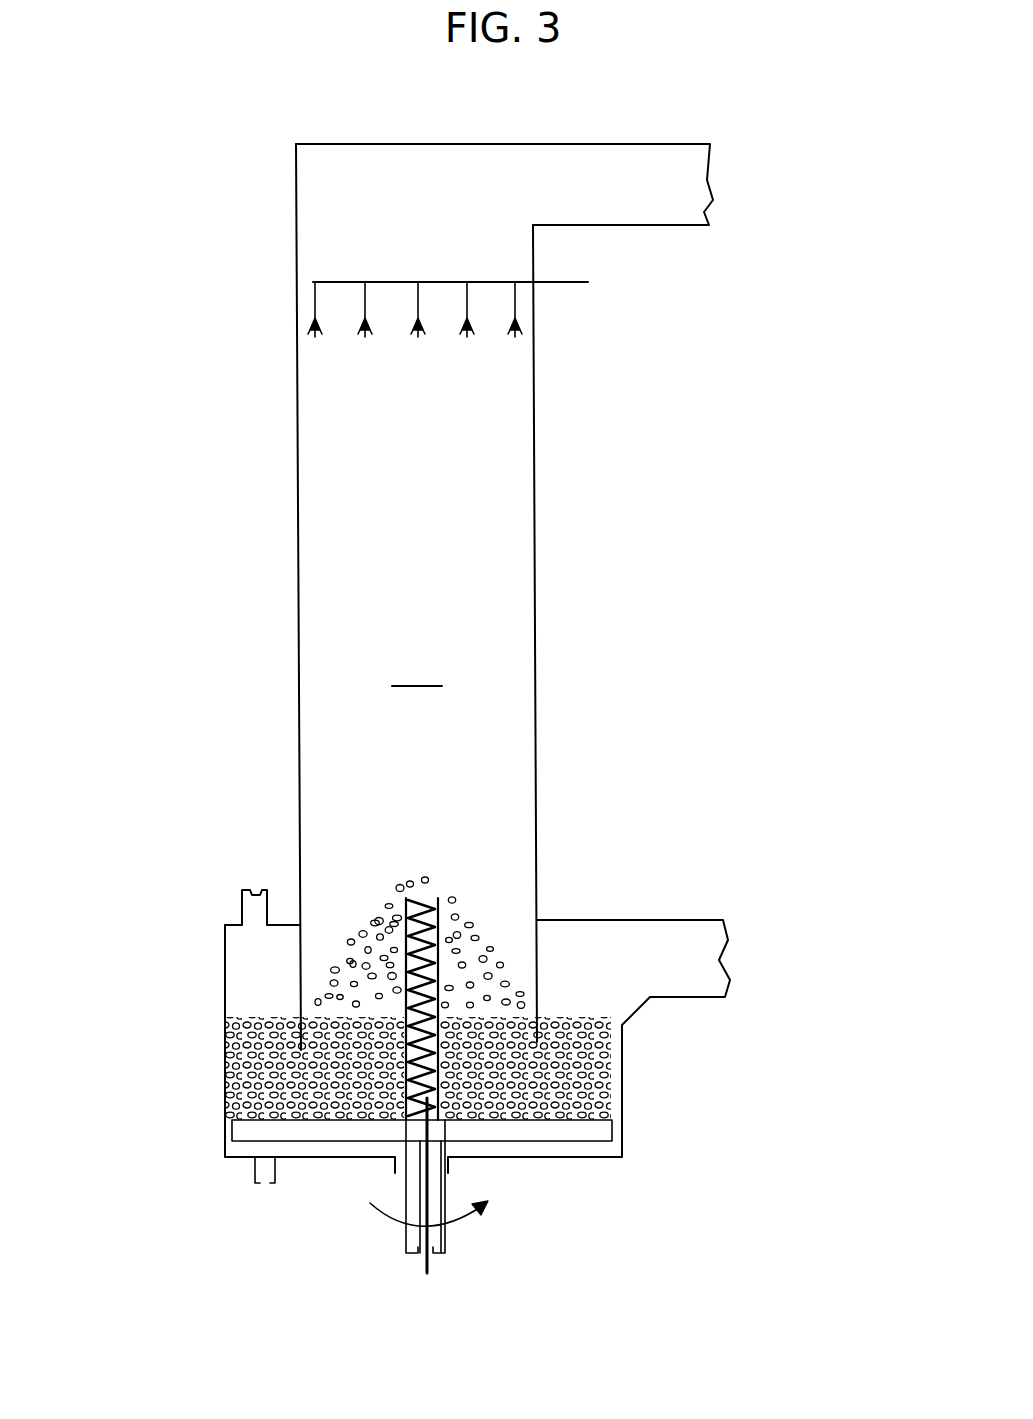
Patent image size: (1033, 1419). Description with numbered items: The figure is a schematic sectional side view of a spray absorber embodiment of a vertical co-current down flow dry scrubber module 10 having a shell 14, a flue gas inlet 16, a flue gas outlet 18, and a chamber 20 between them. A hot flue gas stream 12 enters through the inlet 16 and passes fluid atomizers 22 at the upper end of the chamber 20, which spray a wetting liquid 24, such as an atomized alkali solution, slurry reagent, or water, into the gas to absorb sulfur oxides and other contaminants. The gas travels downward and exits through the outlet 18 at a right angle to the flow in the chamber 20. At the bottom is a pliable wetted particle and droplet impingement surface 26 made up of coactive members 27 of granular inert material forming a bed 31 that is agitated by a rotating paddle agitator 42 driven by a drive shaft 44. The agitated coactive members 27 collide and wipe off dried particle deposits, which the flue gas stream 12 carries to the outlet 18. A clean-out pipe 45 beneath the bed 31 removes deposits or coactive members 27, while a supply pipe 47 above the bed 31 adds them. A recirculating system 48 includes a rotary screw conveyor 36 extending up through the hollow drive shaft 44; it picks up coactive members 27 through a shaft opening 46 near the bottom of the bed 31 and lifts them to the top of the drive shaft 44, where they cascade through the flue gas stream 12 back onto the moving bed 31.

The dry scrubber module 10 is at (582, 546).
The flue gas stream 12 is at (602, 190).
The shell 14 is at (290, 573).
The flue gas inlet 16 is at (660, 228).
The flue gas outlet 18 is at (707, 1005).
The chamber 20 is at (417, 668).
The fluid atomizers 22 is at (437, 267).
The wetting liquid 24 is at (410, 343).
The pliable wetted particle and droplet impingement surface 26 is at (417, 862).
The coactive members 27 is at (478, 897).
The bed 31 is at (218, 1049).
The rotary screw conveyor 36 is at (416, 898).
The rotating paddle agitator 42 is at (247, 1137).
The drive shaft 44 is at (455, 1245).
The clean-out pipe 45 is at (256, 1185).
The opening 46 is at (440, 1098).
The supply pipe 47 is at (250, 882).
The recirculating system 48 is at (650, 1088).